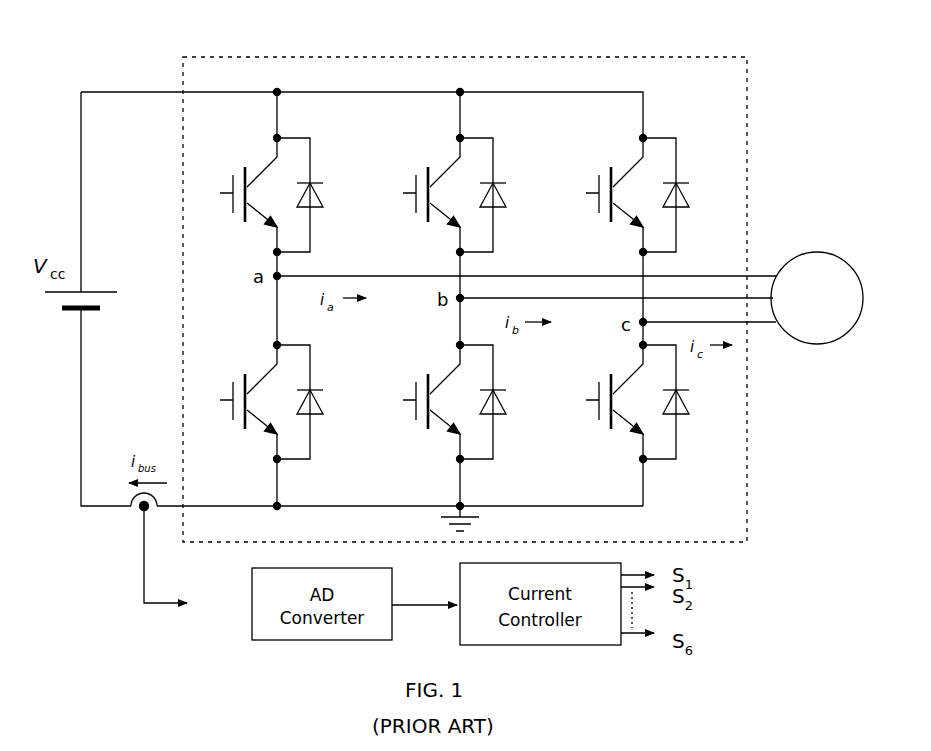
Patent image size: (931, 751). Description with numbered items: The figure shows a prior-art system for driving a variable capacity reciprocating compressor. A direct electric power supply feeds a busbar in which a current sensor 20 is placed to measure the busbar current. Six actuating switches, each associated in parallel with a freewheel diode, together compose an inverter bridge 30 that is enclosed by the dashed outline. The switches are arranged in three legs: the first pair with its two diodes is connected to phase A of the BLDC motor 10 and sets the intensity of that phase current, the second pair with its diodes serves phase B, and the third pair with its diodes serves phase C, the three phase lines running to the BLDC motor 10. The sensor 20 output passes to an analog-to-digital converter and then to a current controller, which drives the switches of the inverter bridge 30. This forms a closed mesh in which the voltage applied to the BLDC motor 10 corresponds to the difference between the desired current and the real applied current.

The BLDC motor 10 is at (829, 352).
The current sensor 20 is at (117, 512).
The inverter bridge 30 is at (275, 57).